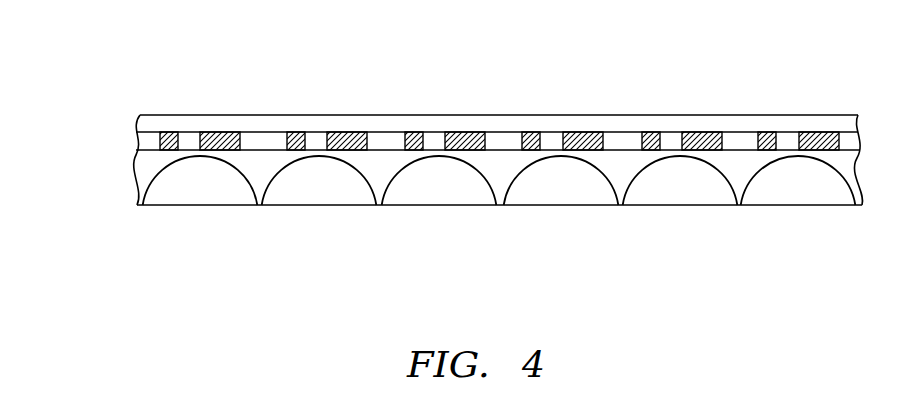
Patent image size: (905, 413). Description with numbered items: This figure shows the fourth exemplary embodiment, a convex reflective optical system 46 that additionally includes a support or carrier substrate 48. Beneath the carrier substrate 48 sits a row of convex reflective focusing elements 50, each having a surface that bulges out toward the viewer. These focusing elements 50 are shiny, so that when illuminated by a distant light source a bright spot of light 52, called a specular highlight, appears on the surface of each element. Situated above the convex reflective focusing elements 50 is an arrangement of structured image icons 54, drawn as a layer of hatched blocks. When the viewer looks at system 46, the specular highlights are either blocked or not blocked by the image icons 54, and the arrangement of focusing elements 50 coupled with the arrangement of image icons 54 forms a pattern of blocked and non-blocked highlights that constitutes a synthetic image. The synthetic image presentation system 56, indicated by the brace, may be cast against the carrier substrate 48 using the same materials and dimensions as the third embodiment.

The convex reflective optical system 46 is at (99, 86).
The carrier substrate 48 is at (796, 125).
The convex reflective focusing element 50 is at (323, 187).
The bright spot of light 52 is at (183, 157).
The structured image icon 54 is at (468, 131).
The synthetic image presentation system 56 is at (123, 133).